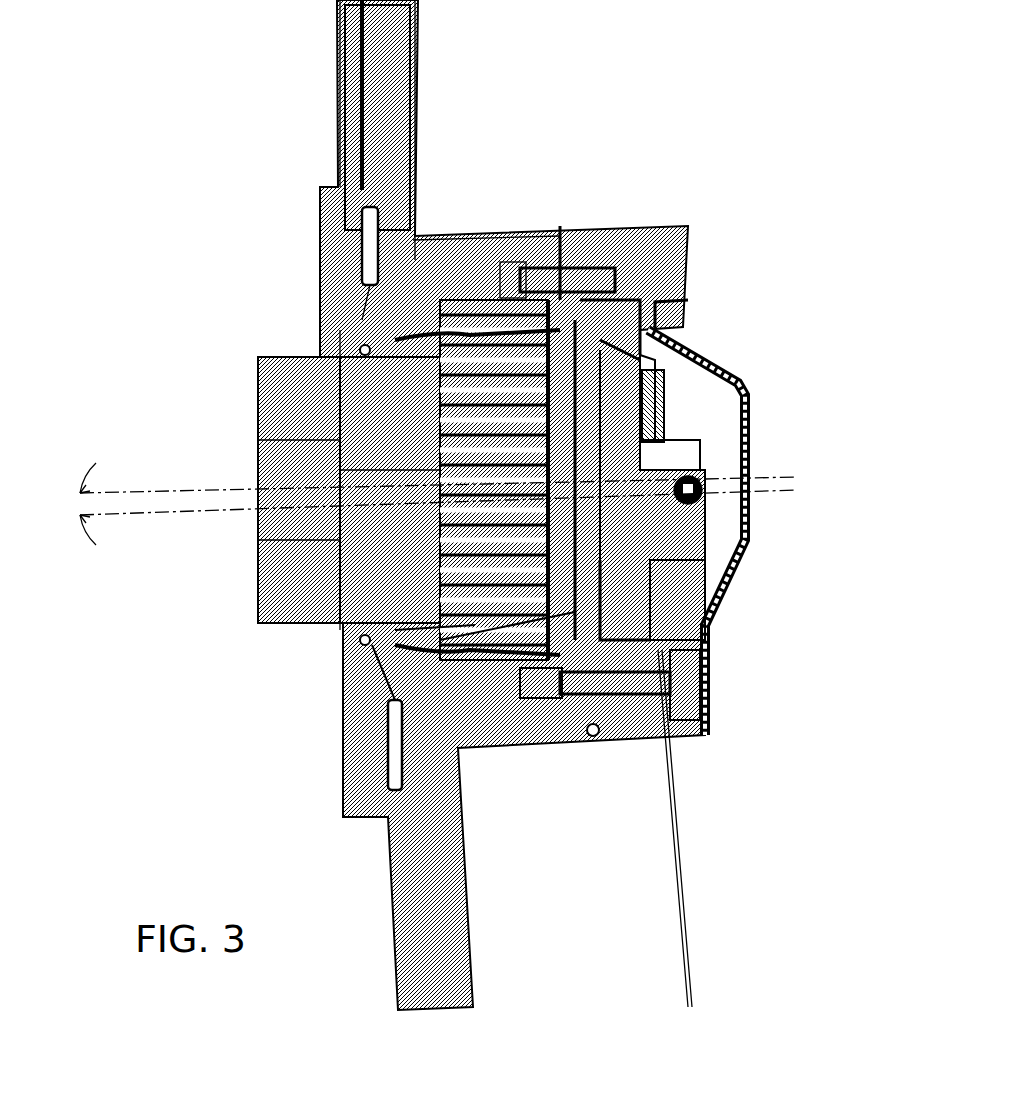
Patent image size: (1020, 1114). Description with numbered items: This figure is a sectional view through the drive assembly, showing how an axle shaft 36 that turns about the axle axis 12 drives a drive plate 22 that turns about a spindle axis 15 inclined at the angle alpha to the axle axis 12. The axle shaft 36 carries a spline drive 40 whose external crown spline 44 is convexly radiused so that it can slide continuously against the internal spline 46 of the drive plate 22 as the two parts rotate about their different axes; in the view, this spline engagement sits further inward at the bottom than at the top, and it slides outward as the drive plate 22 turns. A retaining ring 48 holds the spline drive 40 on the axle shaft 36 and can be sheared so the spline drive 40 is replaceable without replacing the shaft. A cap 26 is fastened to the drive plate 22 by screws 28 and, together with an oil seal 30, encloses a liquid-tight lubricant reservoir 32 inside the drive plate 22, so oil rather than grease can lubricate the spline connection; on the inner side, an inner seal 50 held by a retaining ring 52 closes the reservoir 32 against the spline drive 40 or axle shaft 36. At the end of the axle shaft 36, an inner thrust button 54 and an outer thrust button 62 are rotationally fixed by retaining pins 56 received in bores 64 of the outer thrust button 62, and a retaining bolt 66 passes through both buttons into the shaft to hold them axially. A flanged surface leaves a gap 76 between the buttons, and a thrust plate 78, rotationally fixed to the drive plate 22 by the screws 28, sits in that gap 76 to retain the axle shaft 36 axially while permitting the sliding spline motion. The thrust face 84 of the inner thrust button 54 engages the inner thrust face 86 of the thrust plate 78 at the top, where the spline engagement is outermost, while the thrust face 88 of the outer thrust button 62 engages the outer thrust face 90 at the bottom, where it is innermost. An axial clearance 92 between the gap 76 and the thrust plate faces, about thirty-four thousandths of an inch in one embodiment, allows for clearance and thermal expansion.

The axle axis 12 is at (163, 493).
The spindle axis 15 is at (165, 510).
The drive plate 22 is at (358, 160).
The cap 26 is at (640, 723).
The screws 28 is at (665, 240).
The oil seal 30 is at (593, 740).
The lubricant reservoir 32 is at (720, 523).
The axle shaft 36 is at (258, 435).
The spline drive 40 is at (410, 410).
The external crown spline 44 is at (400, 680).
The internal spline 46 is at (432, 330).
The retaining ring 48 is at (560, 240).
The inner seal 50 is at (350, 305).
The retaining ring 52 is at (352, 230).
The inner thrust button 54 is at (595, 240).
The retaining pins 56 is at (695, 480).
The outer thrust button 62 is at (665, 413).
The bores 64 is at (640, 440).
The retaining bolt 66 is at (700, 575).
The gap 76 is at (652, 350).
The thrust plate 78 is at (640, 330).
The thrust face 84 is at (580, 612).
The inner thrust face 86 is at (475, 625).
The thrust face 88 is at (655, 365).
The outer thrust face 90 is at (640, 340).
The axial clearance 92 is at (700, 963).